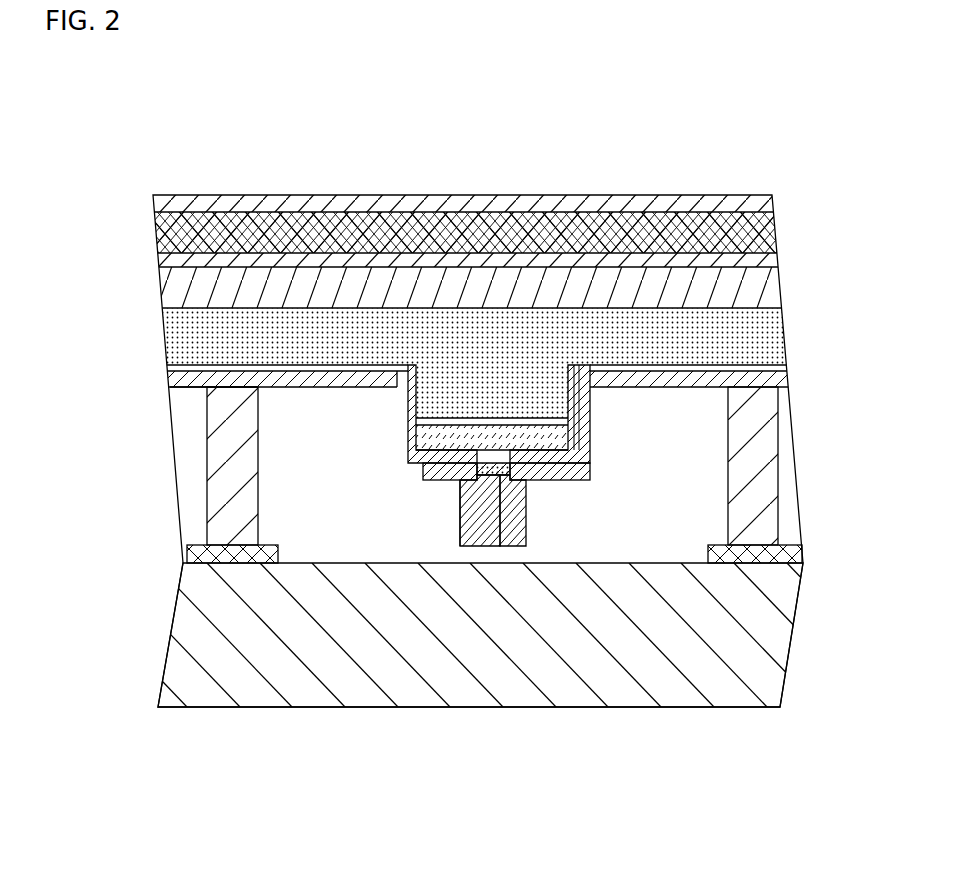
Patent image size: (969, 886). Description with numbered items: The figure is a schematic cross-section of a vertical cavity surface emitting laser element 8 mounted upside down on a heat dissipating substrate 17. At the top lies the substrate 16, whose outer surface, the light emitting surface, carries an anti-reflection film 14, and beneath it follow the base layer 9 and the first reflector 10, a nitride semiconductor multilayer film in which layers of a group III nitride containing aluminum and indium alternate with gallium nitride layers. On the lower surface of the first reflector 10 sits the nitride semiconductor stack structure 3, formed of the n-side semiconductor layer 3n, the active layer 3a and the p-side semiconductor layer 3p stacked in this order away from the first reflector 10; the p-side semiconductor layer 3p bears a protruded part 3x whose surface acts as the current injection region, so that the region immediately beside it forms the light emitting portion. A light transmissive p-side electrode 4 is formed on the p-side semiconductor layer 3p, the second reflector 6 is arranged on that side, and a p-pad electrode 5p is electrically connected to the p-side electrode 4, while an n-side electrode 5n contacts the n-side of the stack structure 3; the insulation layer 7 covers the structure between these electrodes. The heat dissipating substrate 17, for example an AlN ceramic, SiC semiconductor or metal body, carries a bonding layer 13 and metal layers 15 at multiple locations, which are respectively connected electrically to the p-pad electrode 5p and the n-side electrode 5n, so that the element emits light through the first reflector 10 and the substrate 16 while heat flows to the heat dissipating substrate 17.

The vertical cavity surface emitting laser element 8 is at (729, 141).
The anti-reflection film 14 is at (758, 204).
The substrate 16 is at (773, 232).
The base layer 9 is at (770, 262).
The first reflector 10 is at (751, 292).
The insulation layer 7 is at (768, 357).
The nitride semiconductor stack structure 3 is at (512, 427).
The n-side semiconductor layer 3n is at (590, 395).
The active layer 3a is at (590, 422).
The p-side semiconductor layer 3p is at (590, 445).
The protruded part 3x is at (460, 500).
The n-side electrode 5n is at (200, 390).
The p-pad electrode 5p is at (562, 484).
The p-side electrode 4 is at (494, 500).
The second reflector 6 is at (516, 520).
The bonding layer 13 is at (230, 526).
The metal layer 15 is at (207, 555).
The heat dissipating substrate 17 is at (766, 640).